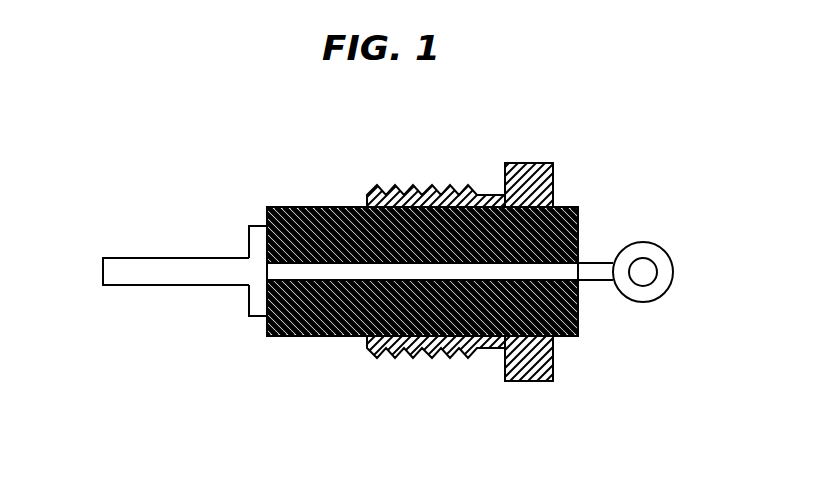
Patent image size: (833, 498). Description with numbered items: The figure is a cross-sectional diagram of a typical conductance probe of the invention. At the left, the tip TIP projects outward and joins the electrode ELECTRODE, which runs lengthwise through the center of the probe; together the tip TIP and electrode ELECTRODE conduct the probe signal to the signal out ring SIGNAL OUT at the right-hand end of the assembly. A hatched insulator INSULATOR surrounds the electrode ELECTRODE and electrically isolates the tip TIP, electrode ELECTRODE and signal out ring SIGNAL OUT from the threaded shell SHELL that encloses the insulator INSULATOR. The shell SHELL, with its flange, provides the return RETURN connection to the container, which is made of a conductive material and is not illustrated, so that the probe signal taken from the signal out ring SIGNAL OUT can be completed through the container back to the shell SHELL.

The tip TIP is at (157, 248).
The electrode ELECTRODE is at (293, 250).
The insulator INSULATOR is at (288, 350).
The shell SHELL is at (495, 374).
The return RETURN is at (553, 368).
The signal out ring SIGNAL OUT is at (665, 252).